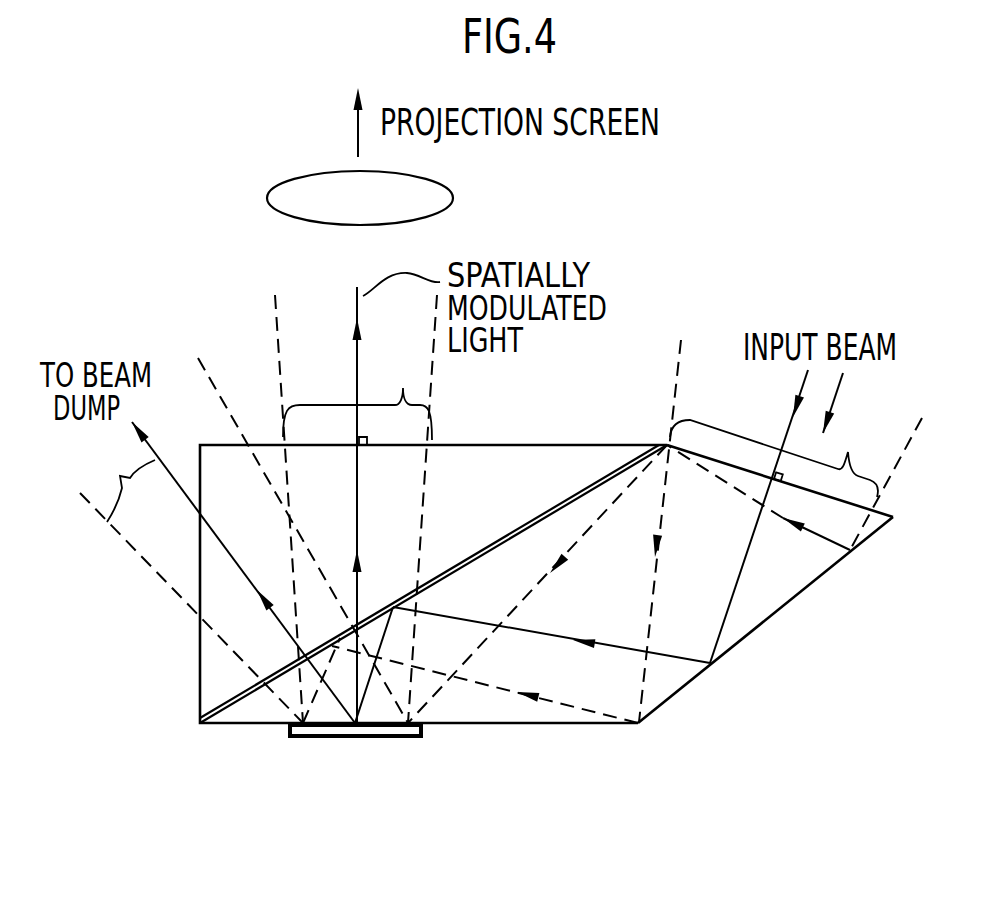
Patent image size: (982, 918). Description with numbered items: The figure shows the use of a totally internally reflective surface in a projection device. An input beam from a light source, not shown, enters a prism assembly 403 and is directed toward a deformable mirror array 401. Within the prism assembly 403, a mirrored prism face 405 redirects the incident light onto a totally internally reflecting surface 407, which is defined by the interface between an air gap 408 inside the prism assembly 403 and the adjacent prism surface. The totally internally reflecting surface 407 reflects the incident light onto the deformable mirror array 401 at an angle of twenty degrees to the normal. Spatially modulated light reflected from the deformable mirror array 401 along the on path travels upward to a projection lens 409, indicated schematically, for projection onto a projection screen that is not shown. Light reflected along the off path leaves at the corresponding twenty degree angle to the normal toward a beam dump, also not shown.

The deformable mirror array 401 is at (287, 740).
The prism assembly 403 is at (577, 728).
The mirrored prism face 405 is at (762, 617).
The totally internally reflecting surface 407 is at (565, 512).
The air gap 408 is at (490, 547).
The projection lens 409 is at (453, 198).